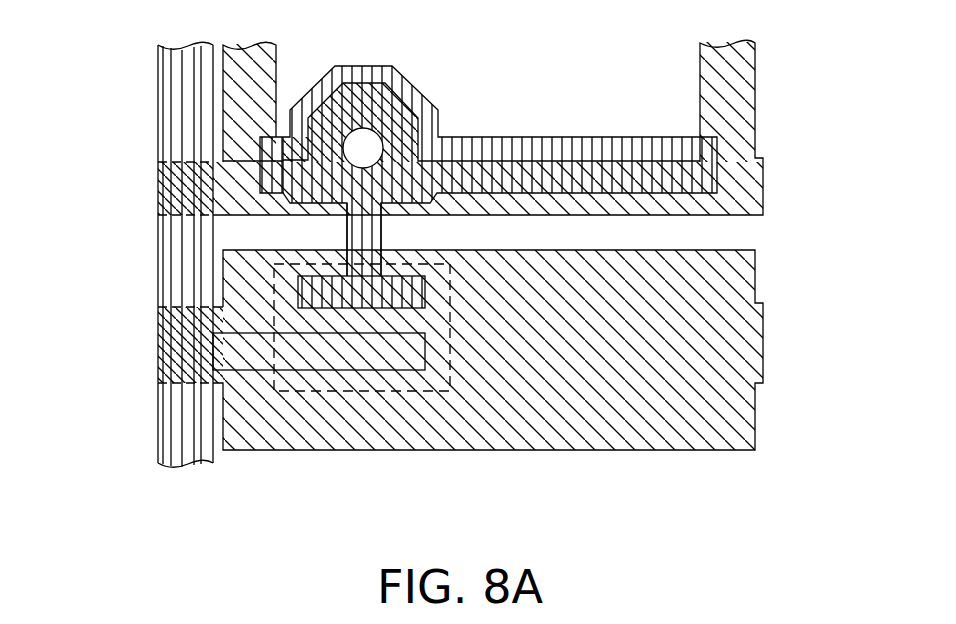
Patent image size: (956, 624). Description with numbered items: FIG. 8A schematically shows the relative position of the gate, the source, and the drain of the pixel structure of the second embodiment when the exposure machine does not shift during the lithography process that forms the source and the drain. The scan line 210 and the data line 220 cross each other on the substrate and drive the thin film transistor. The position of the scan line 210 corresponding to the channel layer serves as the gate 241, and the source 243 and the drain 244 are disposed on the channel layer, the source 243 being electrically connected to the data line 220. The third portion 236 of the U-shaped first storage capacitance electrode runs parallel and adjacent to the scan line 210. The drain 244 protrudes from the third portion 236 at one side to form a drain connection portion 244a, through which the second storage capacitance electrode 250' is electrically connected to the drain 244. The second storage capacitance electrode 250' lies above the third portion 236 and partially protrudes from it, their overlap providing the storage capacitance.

The scan line 210 is at (628, 392).
The data line 220 is at (187, 282).
The third portion 236 is at (640, 200).
The gate 241 is at (378, 392).
The source 243 is at (327, 337).
The drain 244 is at (403, 290).
The drain connection portion 244a is at (360, 232).
The second storage capacitance electrode 250' is at (465, 173).